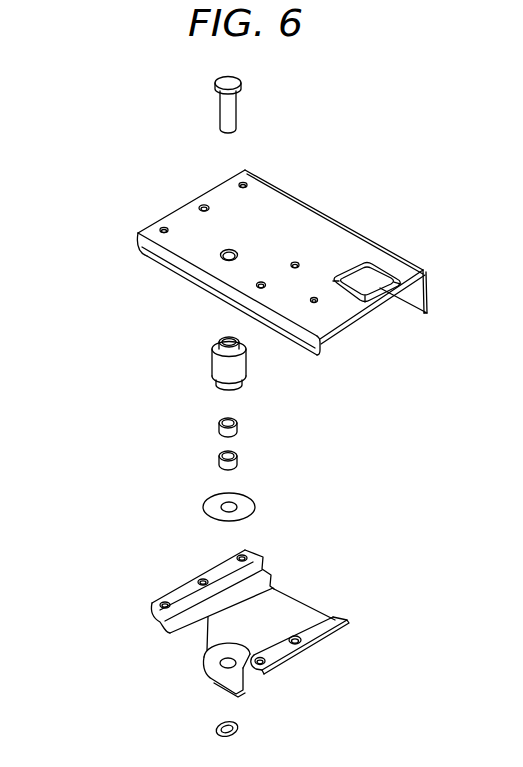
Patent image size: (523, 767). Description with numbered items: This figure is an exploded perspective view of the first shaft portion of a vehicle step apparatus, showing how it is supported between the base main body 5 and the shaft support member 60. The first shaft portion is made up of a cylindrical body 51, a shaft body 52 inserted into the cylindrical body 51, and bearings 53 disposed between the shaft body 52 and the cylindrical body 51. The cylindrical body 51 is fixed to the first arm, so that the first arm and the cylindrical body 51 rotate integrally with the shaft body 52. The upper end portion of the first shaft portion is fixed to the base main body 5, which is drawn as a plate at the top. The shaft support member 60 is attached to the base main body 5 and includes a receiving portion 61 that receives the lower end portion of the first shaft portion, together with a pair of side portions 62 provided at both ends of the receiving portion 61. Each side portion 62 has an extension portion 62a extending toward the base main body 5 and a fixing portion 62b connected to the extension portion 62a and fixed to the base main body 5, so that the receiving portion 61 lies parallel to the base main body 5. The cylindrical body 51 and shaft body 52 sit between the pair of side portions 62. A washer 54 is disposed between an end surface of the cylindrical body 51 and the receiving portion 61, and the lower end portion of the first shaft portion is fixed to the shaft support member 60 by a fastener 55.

The base main body 5 is at (410, 263).
The cylindrical body 51 is at (210, 357).
The shaft body 52 is at (219, 106).
The bearings 53 is at (219, 424).
The washer 54 is at (203, 503).
The fastener 55 is at (238, 729).
The shaft support member 60 is at (222, 633).
The receiving portion 61 is at (205, 679).
The side portions 62 is at (221, 633).
The extension portion 62a is at (172, 647).
The fixing portion 62b is at (157, 609).